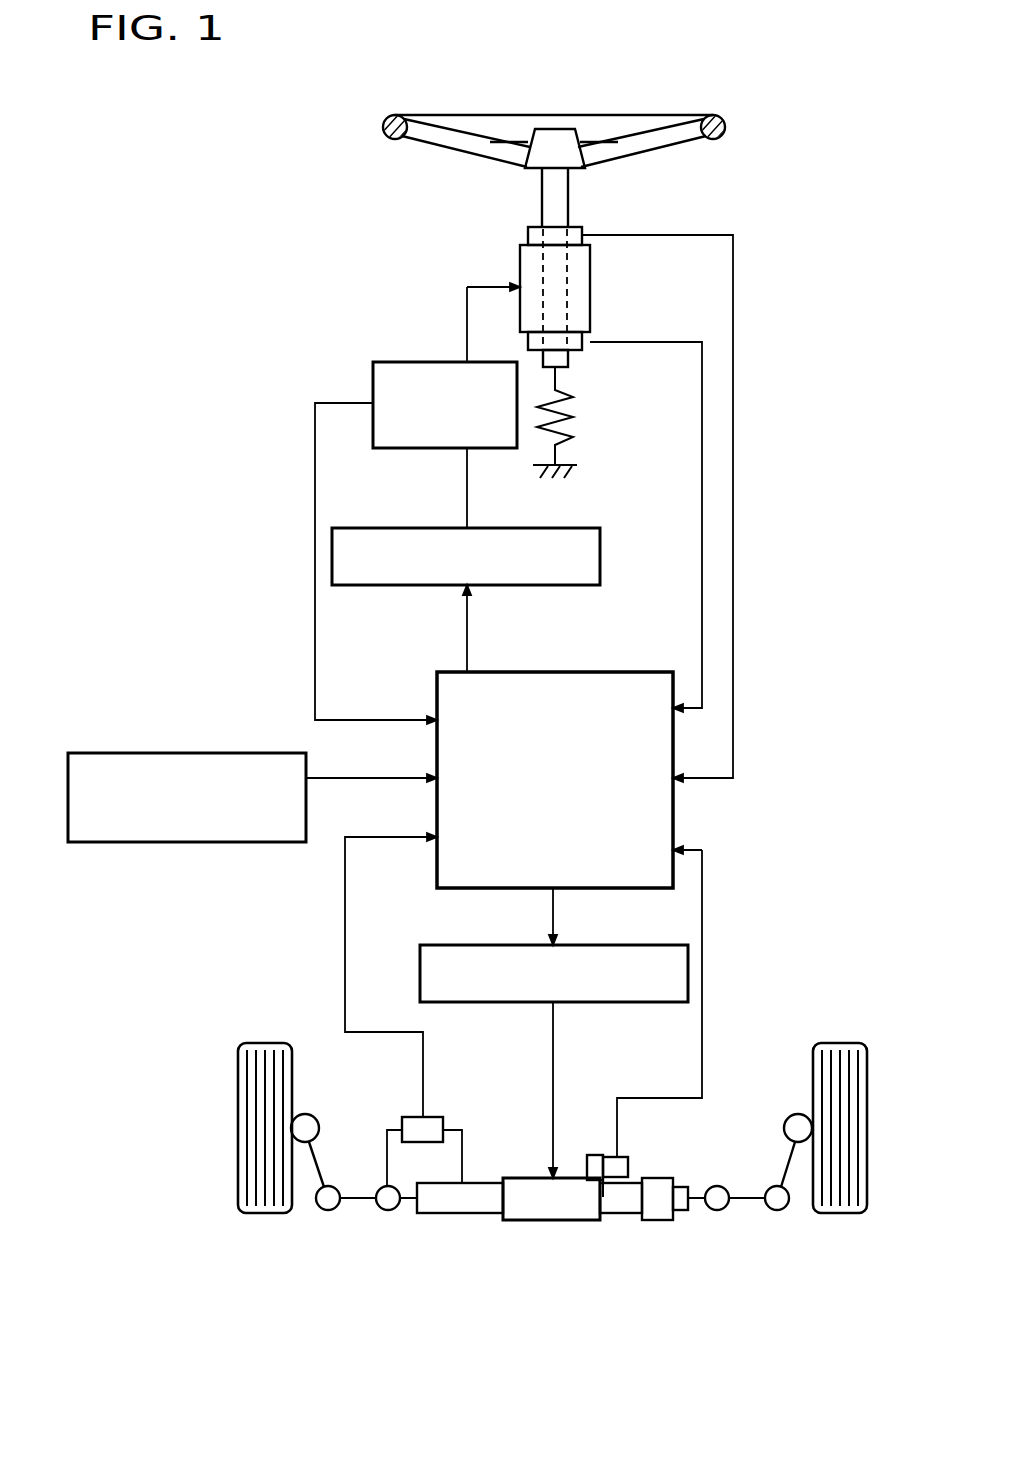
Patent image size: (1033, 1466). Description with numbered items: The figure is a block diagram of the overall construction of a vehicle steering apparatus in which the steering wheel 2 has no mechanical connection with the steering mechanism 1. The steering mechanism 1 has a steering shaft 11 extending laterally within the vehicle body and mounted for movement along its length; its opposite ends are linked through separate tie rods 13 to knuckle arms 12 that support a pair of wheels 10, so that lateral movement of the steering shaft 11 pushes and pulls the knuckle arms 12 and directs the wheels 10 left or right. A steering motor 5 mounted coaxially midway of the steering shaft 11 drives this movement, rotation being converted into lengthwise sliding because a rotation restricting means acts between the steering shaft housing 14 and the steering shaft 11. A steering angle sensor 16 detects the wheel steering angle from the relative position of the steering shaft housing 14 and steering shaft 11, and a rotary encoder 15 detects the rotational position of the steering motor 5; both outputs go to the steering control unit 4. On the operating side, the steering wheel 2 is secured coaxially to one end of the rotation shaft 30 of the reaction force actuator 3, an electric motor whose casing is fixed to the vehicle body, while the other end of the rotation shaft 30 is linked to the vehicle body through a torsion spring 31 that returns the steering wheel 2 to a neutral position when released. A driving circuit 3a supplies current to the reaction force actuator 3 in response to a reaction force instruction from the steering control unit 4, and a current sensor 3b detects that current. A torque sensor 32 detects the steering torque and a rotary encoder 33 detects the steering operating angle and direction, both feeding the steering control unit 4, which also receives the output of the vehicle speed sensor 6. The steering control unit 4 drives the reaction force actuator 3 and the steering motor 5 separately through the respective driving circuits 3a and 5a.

The steering mechanism 1 is at (586, 1256).
The steering wheel 2 is at (383, 123).
The reaction force actuator 3 is at (520, 264).
The driving circuit 3a is at (437, 526).
The current sensor 3b is at (373, 385).
The steering control unit 4 is at (600, 670).
The steering motor 5 is at (550, 1222).
The driving circuit 5a is at (595, 944).
The vehicle speed sensor 6 is at (140, 752).
The wheels 10 is at (262, 1213).
The steering shaft 11 is at (406, 1202).
The knuckle arms 12 is at (313, 1170).
The tie rods 13 is at (357, 1202).
The steering shaft housing 14 is at (453, 1215).
The rotary encoder 15 is at (626, 1158).
The steering angle sensor 16 is at (443, 1125).
The rotation shaft 30 is at (569, 192).
The torsion spring 31 is at (573, 430).
The torque sensor 32 is at (528, 236).
The rotary encoder 33 is at (582, 352).